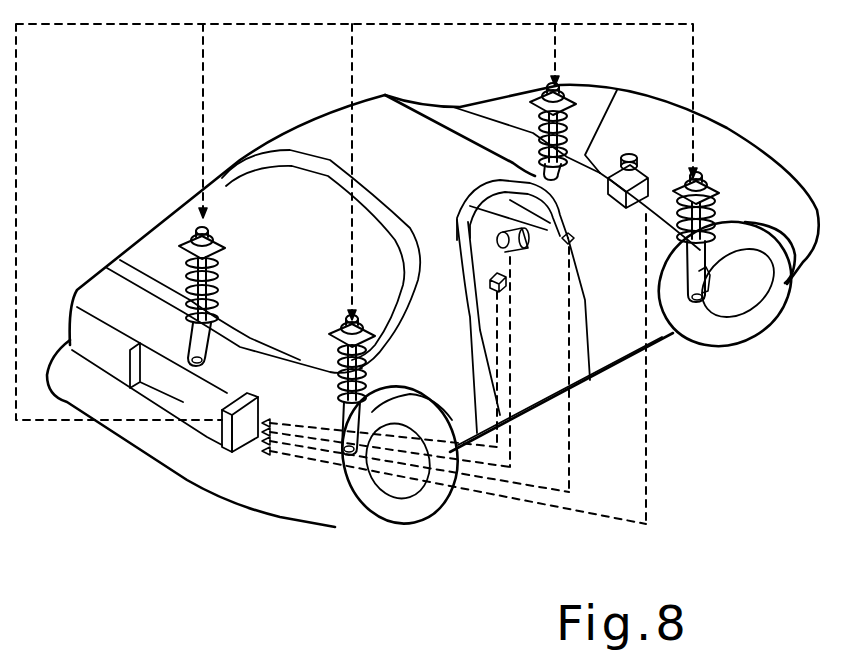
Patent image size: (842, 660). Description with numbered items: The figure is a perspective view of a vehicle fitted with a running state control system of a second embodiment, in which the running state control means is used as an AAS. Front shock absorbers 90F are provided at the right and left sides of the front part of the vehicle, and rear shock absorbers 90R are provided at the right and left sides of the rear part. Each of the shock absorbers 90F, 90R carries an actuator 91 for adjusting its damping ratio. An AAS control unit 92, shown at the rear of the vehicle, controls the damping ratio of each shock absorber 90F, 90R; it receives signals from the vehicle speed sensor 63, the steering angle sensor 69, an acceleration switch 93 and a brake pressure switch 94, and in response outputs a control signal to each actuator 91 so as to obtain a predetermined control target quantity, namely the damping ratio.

The rear shock absorbers 90R is at (155, 318).
The front shock absorbers 90F is at (567, 172).
The actuator 91 is at (195, 226).
The AAS control unit 92 is at (218, 432).
The acceleration switch 93 is at (493, 289).
The brake pressure switch 94 is at (620, 212).
The steering angle sensor 69 is at (505, 252).
The vehicle speed sensor 63 is at (566, 244).